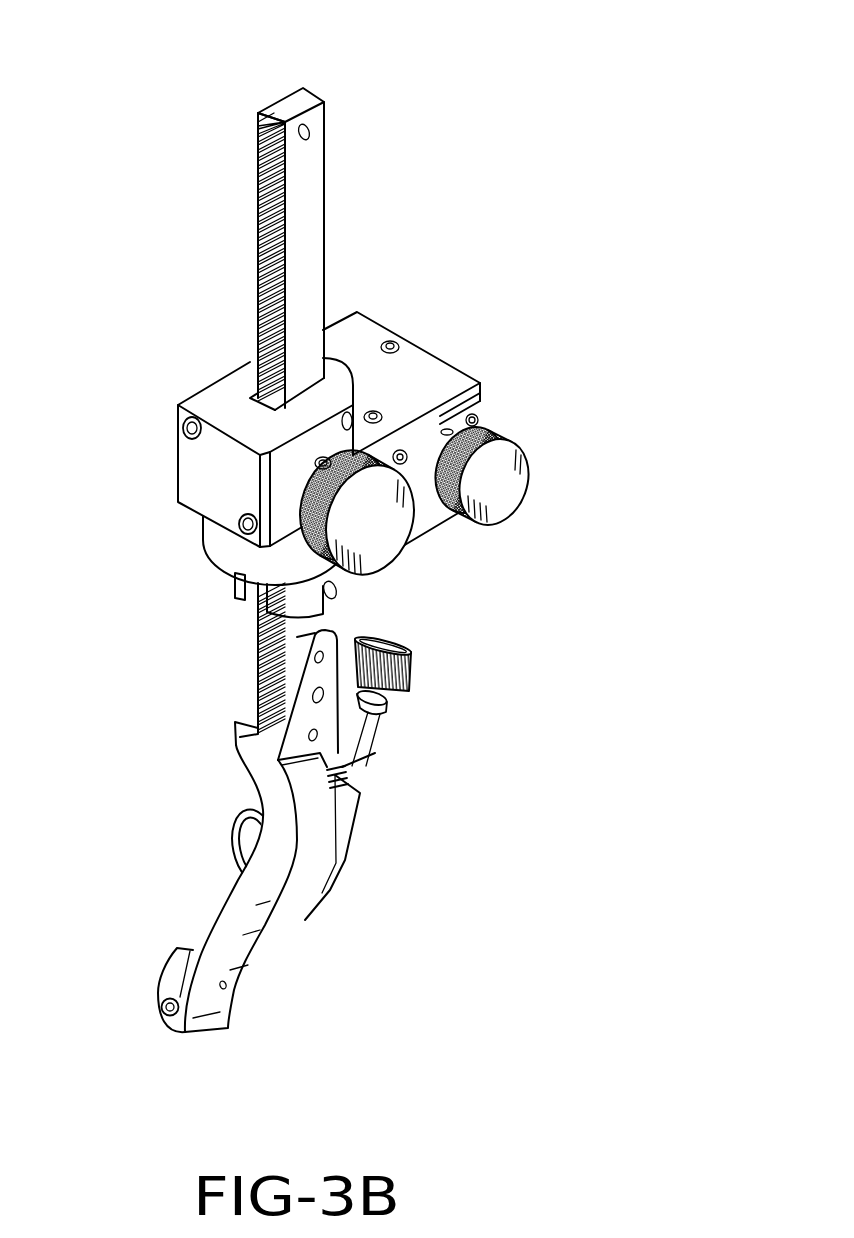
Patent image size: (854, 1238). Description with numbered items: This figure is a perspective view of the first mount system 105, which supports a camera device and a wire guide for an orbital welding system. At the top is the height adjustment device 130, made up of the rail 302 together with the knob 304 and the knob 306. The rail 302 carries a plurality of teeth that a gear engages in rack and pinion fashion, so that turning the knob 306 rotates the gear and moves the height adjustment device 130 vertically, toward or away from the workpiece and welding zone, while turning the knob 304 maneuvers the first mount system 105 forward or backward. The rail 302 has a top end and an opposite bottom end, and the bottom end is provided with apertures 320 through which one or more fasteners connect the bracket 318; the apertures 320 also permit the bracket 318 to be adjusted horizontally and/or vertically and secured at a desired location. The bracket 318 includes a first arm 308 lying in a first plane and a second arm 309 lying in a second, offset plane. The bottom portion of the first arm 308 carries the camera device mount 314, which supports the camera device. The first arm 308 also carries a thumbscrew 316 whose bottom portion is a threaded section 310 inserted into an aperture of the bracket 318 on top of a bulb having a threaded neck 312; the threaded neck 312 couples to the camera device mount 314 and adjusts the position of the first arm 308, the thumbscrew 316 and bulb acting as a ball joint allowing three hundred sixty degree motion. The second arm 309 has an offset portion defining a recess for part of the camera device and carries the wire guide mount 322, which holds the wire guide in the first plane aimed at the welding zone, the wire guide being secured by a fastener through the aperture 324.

The first mount system 105 is at (458, 123).
The height adjustment device 130 is at (425, 377).
The rail 302 is at (305, 194).
The knob 304 is at (492, 482).
The knob 306 is at (372, 522).
The first arm 308 is at (418, 652).
The second arm 309 is at (255, 854).
The threaded section 310 is at (384, 708).
The threaded neck 312 is at (338, 778).
The camera device mount 314 is at (340, 836).
The thumbscrew 316 is at (378, 634).
The bracket 318 is at (238, 738).
The apertures 320 is at (311, 734).
The wire guide mount 322 is at (162, 1010).
The aperture 324 is at (226, 986).